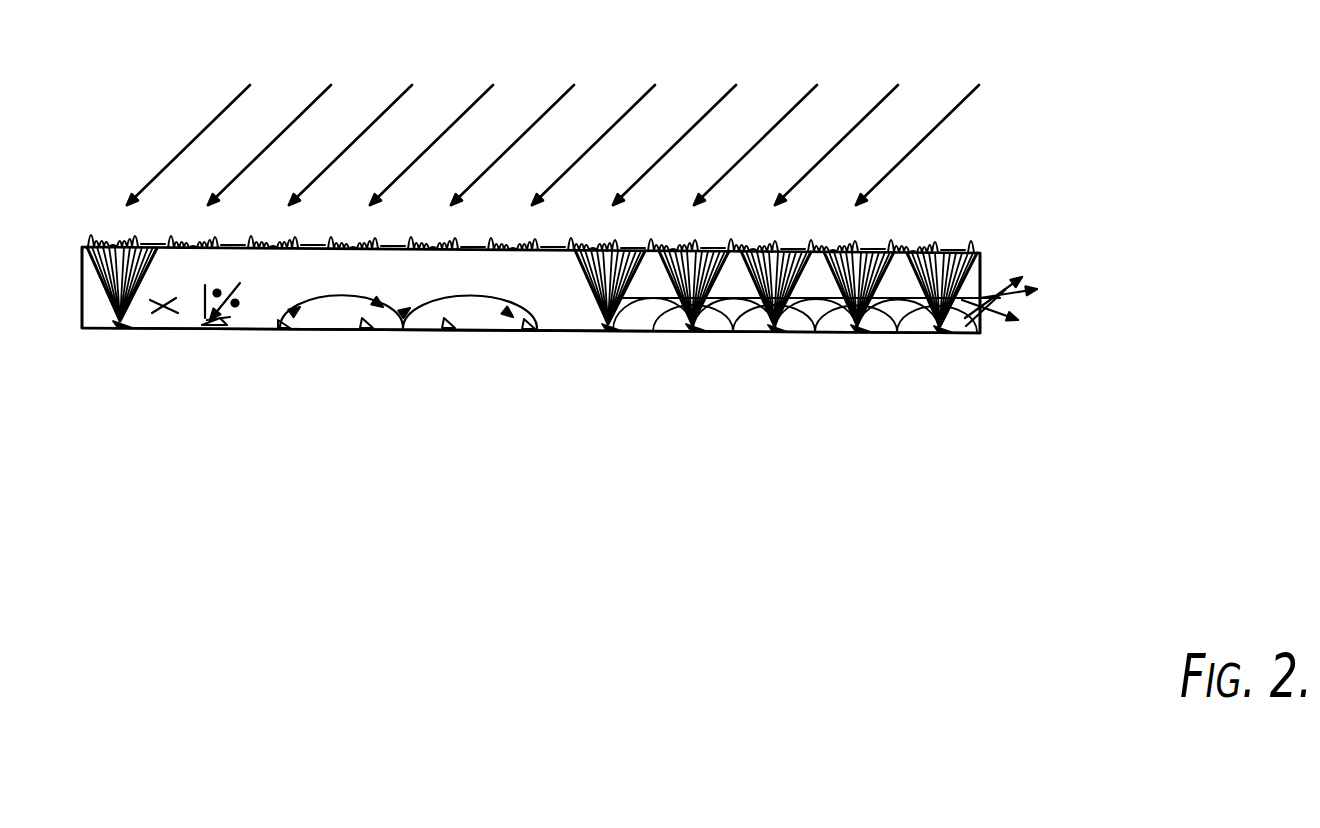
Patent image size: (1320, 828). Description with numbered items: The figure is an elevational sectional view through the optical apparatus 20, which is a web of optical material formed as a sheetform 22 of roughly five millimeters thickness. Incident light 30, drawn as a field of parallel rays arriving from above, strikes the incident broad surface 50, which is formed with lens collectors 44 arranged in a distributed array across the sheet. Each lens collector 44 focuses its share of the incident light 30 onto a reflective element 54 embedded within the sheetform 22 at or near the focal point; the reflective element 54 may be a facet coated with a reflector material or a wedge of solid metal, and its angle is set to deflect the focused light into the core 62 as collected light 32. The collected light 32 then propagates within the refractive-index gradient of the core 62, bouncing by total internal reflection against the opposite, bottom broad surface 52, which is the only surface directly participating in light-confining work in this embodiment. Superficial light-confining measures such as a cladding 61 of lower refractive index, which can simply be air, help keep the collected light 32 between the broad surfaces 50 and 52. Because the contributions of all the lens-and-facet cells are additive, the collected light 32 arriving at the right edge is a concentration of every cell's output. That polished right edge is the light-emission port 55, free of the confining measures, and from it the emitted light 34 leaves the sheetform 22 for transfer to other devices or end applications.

The optical apparatus 20 is at (1103, 172).
The sheetform 22 is at (82, 298).
The incident light 30 is at (187, 138).
The collected light 32 is at (488, 297).
The emitted light 34 is at (998, 318).
The lens collector 44 is at (90, 242).
The broad surface 50 is at (897, 242).
The broad surface 52 is at (908, 338).
The reflective element 54 is at (283, 328).
The light-emission port 55 is at (985, 265).
The cladding 61 is at (570, 338).
The core 62 is at (167, 313).